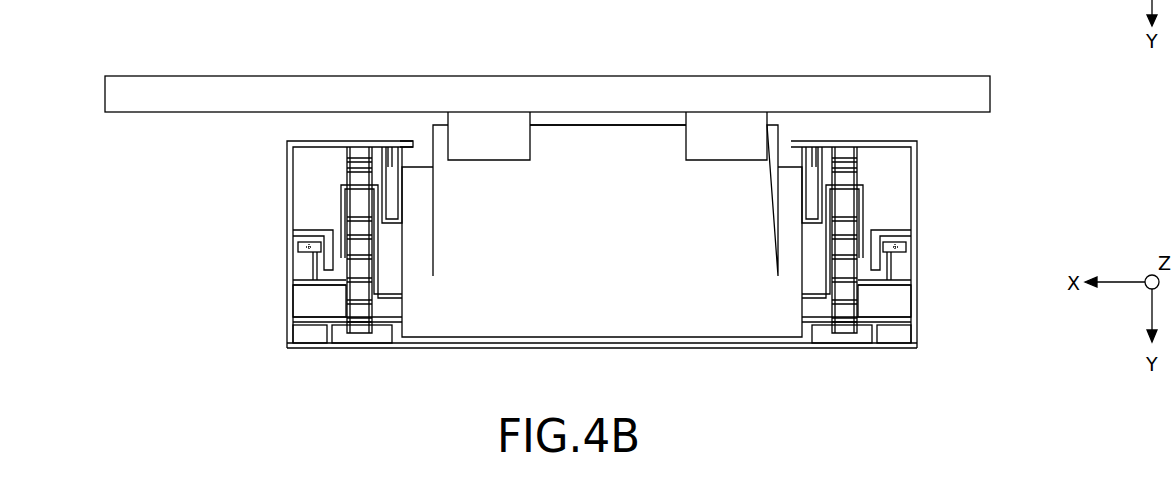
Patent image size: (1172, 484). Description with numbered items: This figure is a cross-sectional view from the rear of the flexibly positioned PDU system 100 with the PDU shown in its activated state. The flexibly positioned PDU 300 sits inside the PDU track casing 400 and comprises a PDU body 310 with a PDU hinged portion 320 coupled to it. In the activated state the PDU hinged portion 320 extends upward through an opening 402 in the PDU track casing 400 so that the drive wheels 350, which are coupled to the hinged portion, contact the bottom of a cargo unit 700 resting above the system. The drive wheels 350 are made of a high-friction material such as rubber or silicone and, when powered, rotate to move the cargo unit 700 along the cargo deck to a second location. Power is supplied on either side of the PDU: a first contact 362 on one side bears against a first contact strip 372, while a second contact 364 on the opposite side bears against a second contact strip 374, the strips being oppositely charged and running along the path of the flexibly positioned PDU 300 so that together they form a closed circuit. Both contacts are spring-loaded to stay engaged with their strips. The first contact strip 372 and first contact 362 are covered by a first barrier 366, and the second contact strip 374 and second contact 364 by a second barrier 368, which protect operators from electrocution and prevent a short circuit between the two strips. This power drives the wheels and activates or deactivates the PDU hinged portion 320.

The flexibly positioned PDU system 100 is at (134, 49).
The flexibly positioned PDU 300 is at (607, 127).
The PDU body 310 is at (432, 320).
The PDU hinged portion 320 is at (650, 130).
The drive wheel 350 is at (473, 122).
The first contact 362 is at (305, 273).
The second contact 364 is at (899, 273).
The first barrier 366 is at (314, 256).
The second barrier 368 is at (890, 256).
The first contact strip 372 is at (298, 246).
The second contact strip 374 is at (906, 246).
The PDU track casing 400 is at (588, 348).
The opening 402 is at (420, 142).
The cargo unit 700 is at (975, 77).